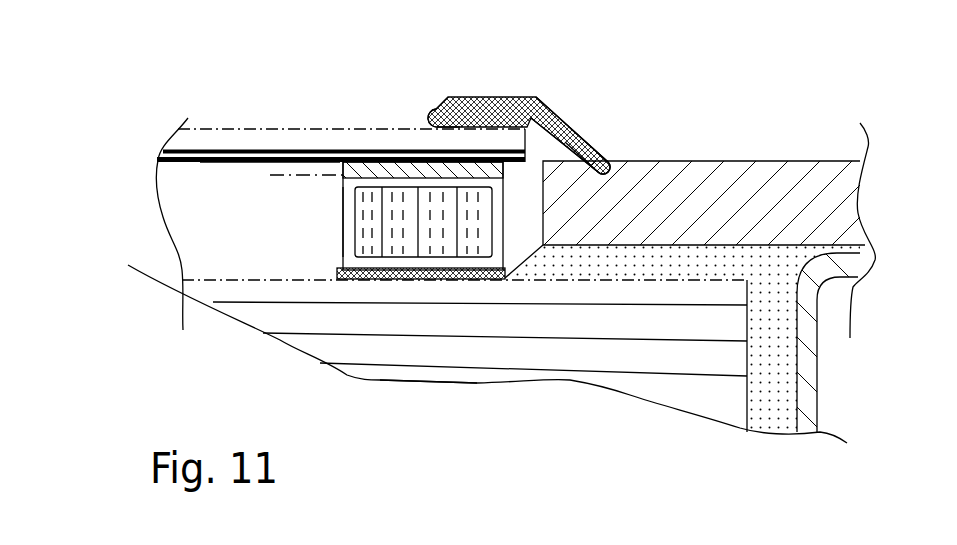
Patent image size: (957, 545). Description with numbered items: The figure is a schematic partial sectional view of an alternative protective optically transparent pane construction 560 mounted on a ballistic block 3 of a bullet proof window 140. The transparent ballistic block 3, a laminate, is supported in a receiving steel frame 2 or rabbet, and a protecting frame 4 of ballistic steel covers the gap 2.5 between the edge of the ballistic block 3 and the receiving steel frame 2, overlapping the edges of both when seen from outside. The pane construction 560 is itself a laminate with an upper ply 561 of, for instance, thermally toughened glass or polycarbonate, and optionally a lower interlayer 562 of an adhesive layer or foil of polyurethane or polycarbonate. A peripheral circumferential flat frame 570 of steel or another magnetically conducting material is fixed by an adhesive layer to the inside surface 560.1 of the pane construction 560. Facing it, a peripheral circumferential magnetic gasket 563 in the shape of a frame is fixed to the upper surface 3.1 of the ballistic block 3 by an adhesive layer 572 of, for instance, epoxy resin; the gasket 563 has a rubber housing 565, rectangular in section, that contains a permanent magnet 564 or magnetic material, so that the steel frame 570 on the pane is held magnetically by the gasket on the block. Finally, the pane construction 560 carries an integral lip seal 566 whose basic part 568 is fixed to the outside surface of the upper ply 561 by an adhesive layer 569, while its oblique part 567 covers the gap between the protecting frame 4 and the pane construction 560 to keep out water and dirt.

The protective pane construction 560 is at (288, 138).
The upper ply 561 is at (247, 149).
The lower interlayer 562 is at (208, 157).
The inside surface 560.1 is at (233, 177).
The flat frame 570 is at (383, 176).
The adhesive layer 572 is at (467, 278).
The permanent magnet 564 is at (373, 240).
The housing 565 is at (350, 216).
The magnetic gasket 563 is at (400, 268).
The lip seal 566 is at (493, 98).
The basic part 568 is at (446, 112).
The adhesive layer 569 is at (540, 96).
The oblique part 567 is at (563, 117).
The protecting frame 4 is at (667, 180).
The gap 2.5 is at (766, 384).
The receiving steel frame 2 is at (803, 437).
The ballistic block 3 is at (556, 355).
The upper surface 3.1 is at (220, 265).
The bullet proof window 140 is at (450, 411).